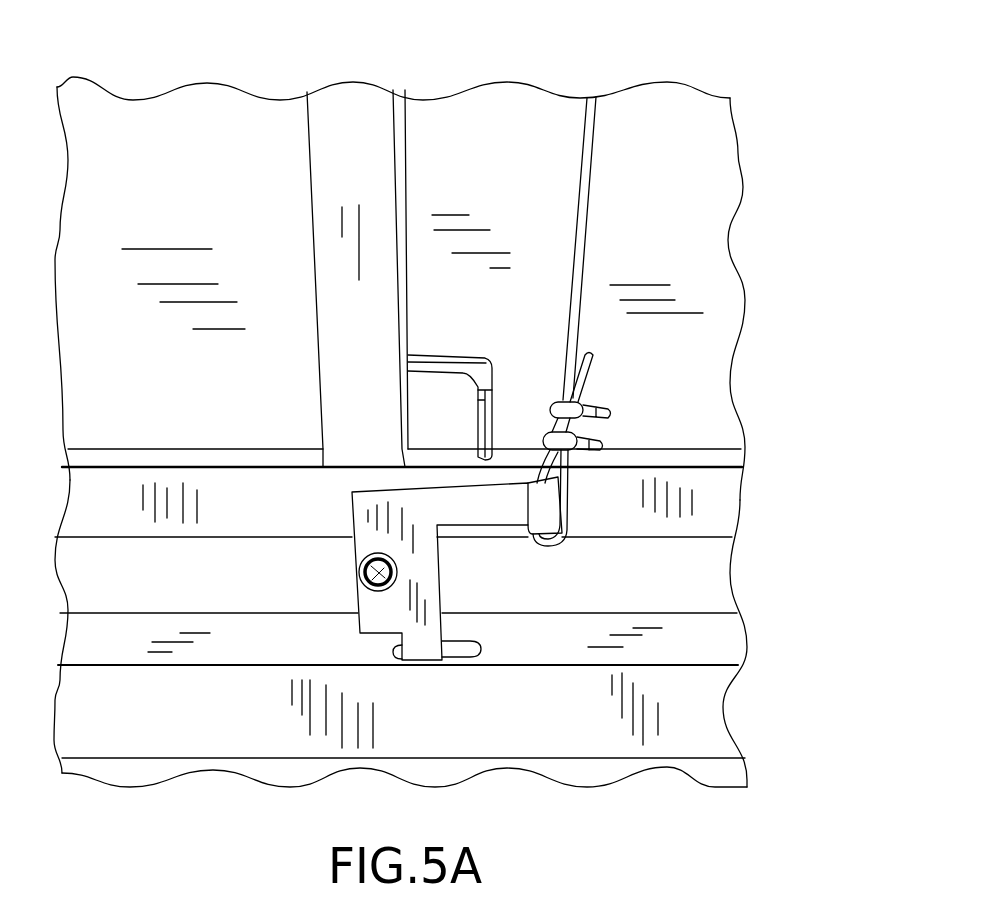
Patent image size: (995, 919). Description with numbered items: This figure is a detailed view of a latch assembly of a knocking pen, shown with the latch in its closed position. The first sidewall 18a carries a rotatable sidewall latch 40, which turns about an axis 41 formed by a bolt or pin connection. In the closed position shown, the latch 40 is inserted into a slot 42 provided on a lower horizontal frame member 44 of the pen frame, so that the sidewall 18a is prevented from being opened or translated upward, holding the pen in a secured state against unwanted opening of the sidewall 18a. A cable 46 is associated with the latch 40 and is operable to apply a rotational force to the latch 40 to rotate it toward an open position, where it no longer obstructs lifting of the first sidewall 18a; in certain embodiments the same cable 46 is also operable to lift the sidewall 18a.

The first sidewall 18a is at (525, 108).
The sidewall latch 40 is at (503, 503).
The axis 41 is at (378, 578).
The slot 42 is at (462, 652).
The lower horizontal frame member 44 is at (612, 752).
The cable 46 is at (593, 120).